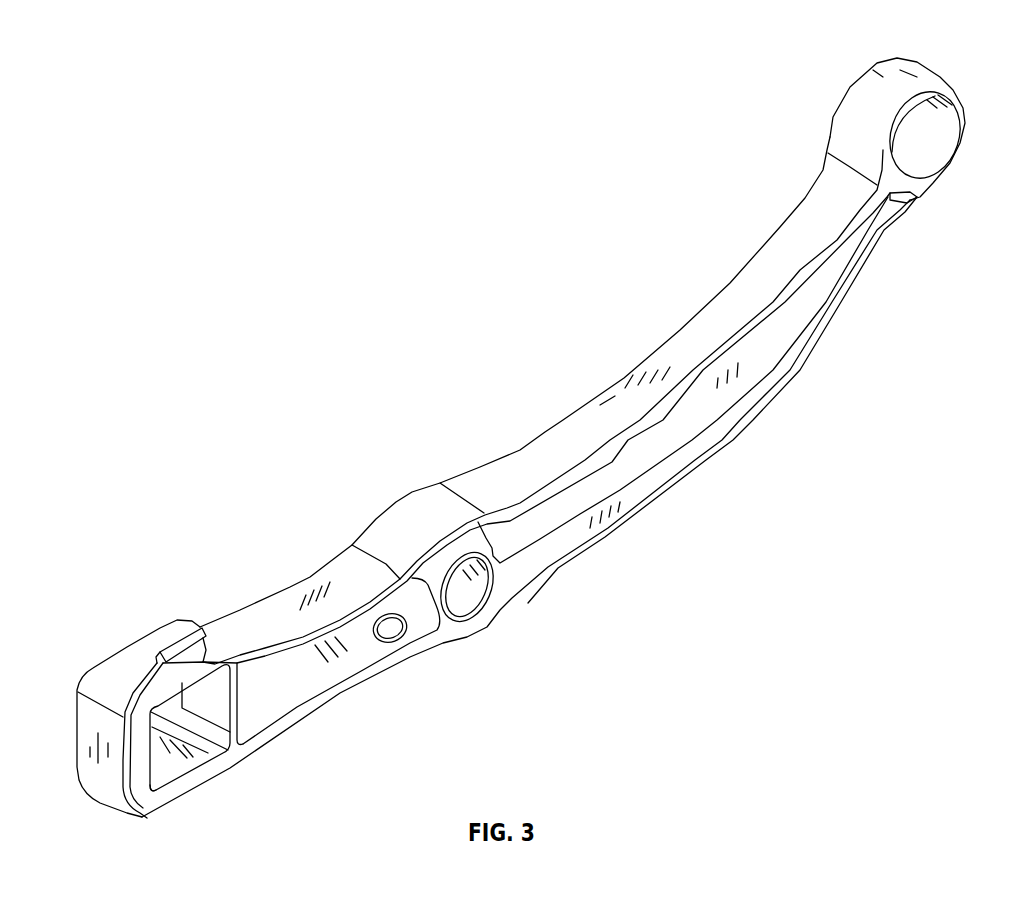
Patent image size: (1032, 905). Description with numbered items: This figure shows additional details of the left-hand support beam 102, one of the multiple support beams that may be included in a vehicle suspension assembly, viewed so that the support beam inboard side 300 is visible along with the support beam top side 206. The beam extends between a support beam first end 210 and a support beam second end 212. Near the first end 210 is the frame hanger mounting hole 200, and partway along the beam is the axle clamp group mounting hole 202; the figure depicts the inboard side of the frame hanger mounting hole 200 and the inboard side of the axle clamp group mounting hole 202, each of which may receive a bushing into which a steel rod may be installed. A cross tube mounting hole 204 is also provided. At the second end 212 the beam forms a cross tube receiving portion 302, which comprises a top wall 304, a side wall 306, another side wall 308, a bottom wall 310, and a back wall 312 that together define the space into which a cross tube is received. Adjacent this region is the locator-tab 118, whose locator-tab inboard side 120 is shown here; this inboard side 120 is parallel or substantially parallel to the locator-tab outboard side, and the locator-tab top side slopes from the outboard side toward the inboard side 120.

The left-hand support beam 102 is at (524, 453).
The locator-tab 118 is at (153, 643).
The locator-tab inboard side 120 is at (193, 662).
The frame hanger mounting hole 200 is at (928, 146).
The axle clamp group mounting hole 202 is at (461, 597).
The cross tube mounting hole 204 is at (196, 683).
The support beam top side 206 is at (633, 418).
The support beam first end 210 is at (933, 80).
The support beam second end 212 is at (88, 722).
The support beam inboard side 300 is at (760, 354).
The cross tube receiving portion 302 is at (205, 803).
The top wall 304 is at (170, 712).
The side wall 306 is at (215, 684).
The side wall 308 is at (157, 775).
The bottom wall 310 is at (187, 766).
The back wall 312 is at (170, 730).